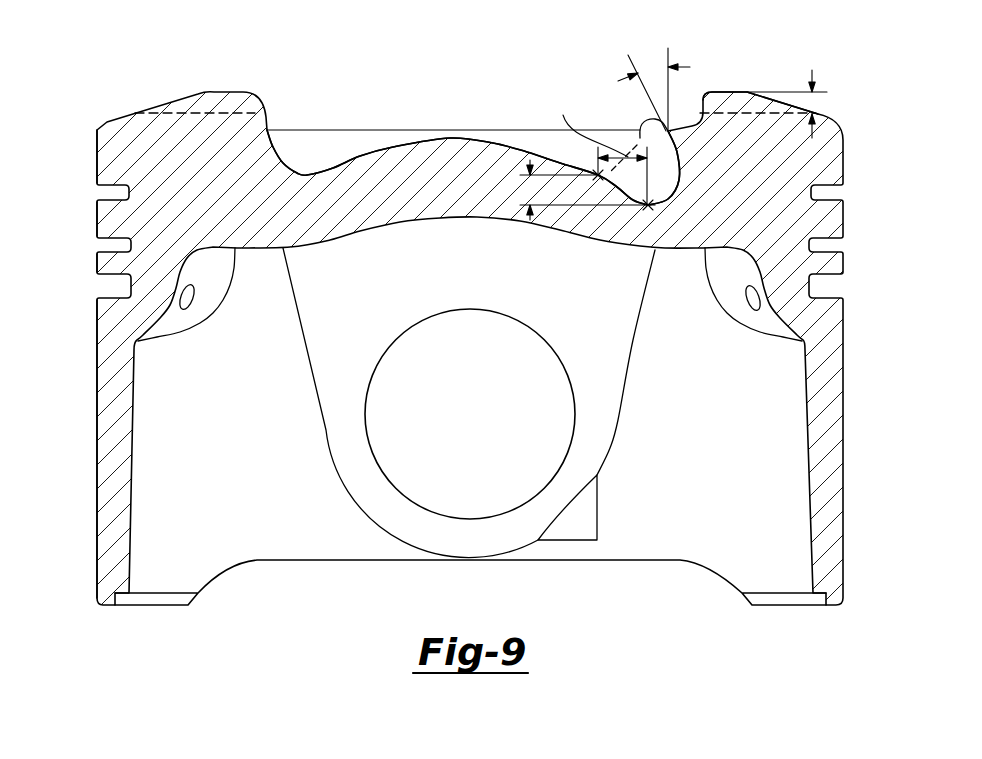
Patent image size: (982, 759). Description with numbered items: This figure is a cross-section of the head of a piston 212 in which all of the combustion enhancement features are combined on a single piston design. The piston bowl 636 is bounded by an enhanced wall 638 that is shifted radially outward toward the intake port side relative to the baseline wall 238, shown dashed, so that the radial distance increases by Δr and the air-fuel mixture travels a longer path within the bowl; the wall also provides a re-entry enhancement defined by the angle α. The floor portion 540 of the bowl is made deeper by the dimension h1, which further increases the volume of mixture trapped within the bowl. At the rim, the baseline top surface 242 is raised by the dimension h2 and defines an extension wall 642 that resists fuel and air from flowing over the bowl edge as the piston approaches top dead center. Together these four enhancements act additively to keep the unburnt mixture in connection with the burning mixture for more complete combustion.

The piston 212 is at (97, 157).
The piston bowl 636 is at (491, 379).
The floor portion 540 is at (507, 142).
The baseline wall 238 is at (637, 127).
The enhanced wall 638 is at (682, 180).
The extension wall 642 is at (727, 89).
The baseline top surface 242 is at (746, 117).